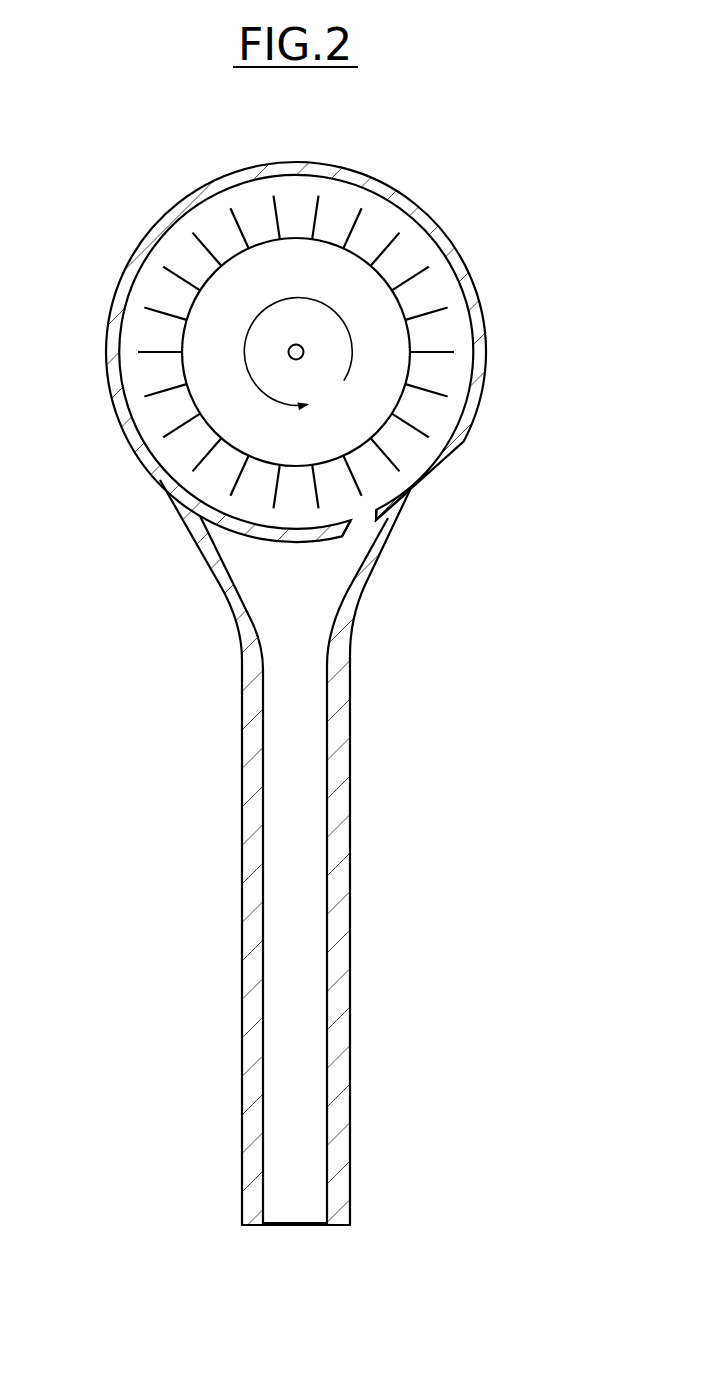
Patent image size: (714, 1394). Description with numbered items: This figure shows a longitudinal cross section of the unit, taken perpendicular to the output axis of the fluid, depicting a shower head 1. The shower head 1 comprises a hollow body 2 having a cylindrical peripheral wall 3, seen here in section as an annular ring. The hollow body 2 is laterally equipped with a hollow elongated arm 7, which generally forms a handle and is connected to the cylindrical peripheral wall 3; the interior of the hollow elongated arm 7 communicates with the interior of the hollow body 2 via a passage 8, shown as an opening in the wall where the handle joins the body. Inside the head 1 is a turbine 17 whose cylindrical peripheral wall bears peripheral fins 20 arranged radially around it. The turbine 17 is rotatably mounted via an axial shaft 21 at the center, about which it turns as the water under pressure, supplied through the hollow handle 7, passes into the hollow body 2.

The shower head 1 is at (153, 172).
The hollow body 2 is at (298, 158).
The cylindrical peripheral wall 3 is at (477, 323).
The hollow elongated arm 7 is at (344, 995).
The passage 8 is at (368, 527).
The turbine 17 is at (231, 403).
The peripheral fins 20 is at (158, 354).
The axial shaft 21 is at (288, 346).